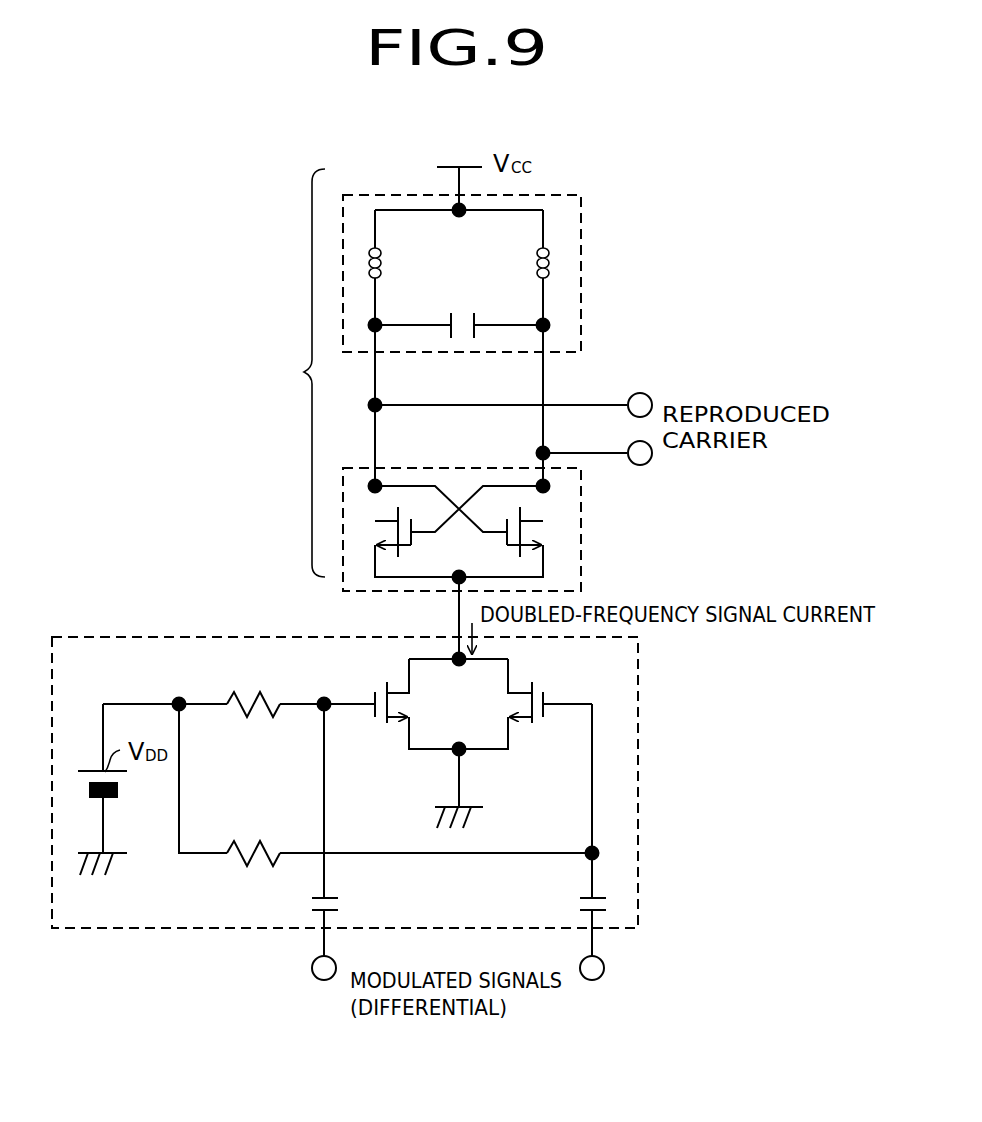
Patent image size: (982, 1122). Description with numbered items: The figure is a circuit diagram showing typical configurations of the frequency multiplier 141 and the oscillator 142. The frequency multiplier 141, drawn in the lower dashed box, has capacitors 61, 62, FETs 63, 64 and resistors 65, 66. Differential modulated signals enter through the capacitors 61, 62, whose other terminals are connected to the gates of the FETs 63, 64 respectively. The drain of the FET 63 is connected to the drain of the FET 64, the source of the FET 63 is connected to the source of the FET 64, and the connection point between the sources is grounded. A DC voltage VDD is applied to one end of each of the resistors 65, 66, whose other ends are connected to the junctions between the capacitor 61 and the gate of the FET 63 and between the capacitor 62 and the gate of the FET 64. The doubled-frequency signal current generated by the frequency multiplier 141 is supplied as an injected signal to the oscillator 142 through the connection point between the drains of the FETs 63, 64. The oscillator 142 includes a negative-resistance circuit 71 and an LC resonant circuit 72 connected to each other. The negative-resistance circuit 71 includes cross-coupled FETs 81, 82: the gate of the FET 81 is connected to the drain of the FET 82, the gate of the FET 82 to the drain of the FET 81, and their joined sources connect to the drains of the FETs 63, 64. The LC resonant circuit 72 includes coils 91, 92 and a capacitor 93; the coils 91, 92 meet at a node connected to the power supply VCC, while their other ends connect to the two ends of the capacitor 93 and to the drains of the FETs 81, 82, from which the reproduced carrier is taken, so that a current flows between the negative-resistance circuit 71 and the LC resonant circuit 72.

The capacitor 61 is at (330, 897).
The capacitor 62 is at (587, 897).
The FET 63 is at (388, 720).
The FET 64 is at (530, 720).
The resistor 65 is at (258, 717).
The resistor 66 is at (258, 862).
The negative-resistance circuit 71 is at (581, 532).
The LC resonant circuit 72 is at (581, 275).
The FET 81 is at (398, 556).
The FET 82 is at (520, 554).
The coil 91 is at (384, 268).
The coil 92 is at (534, 264).
The capacitor 93 is at (476, 322).
The frequency multiplier 141 is at (112, 635).
The oscillator 142 is at (289, 373).